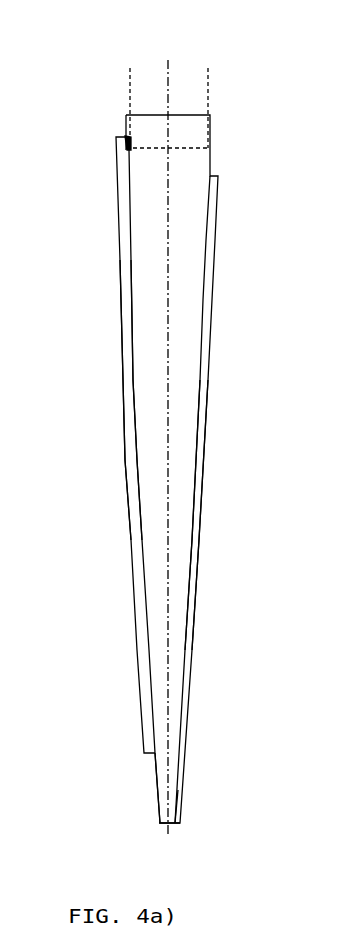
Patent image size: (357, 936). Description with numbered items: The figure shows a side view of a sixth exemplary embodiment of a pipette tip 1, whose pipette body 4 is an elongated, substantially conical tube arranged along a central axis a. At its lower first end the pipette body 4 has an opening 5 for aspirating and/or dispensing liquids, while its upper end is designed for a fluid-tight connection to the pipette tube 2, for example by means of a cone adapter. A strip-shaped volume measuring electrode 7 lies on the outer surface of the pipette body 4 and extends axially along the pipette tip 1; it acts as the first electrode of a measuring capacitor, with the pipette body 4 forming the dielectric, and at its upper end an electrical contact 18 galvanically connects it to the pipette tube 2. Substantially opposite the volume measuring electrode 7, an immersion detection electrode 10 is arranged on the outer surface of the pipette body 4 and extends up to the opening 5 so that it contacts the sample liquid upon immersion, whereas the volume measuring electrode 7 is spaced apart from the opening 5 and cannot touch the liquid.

The central axis a is at (172, 66).
The pipette tube 2 is at (198, 91).
The pipette tip 1 is at (221, 281).
The pipette body 4 is at (188, 408).
The volume measuring electrode 7 is at (130, 443).
The immersion detection electrode 10 is at (200, 508).
The opening 5 is at (156, 823).
The electrical contact 18 is at (125, 138).